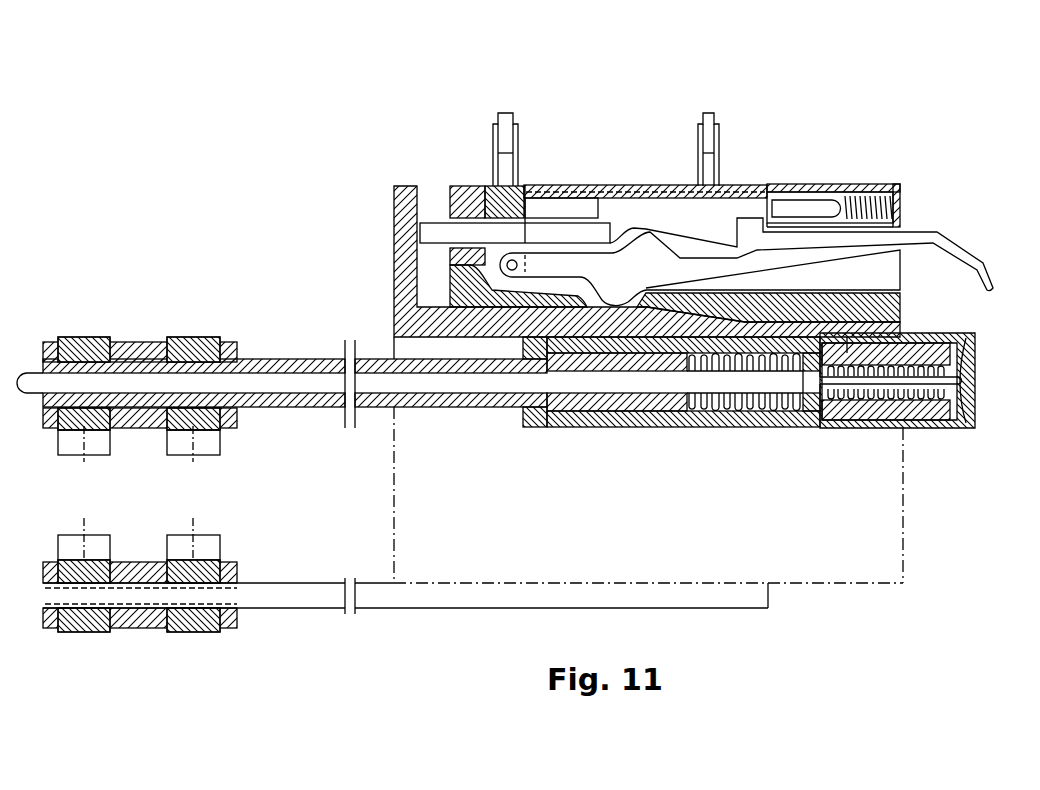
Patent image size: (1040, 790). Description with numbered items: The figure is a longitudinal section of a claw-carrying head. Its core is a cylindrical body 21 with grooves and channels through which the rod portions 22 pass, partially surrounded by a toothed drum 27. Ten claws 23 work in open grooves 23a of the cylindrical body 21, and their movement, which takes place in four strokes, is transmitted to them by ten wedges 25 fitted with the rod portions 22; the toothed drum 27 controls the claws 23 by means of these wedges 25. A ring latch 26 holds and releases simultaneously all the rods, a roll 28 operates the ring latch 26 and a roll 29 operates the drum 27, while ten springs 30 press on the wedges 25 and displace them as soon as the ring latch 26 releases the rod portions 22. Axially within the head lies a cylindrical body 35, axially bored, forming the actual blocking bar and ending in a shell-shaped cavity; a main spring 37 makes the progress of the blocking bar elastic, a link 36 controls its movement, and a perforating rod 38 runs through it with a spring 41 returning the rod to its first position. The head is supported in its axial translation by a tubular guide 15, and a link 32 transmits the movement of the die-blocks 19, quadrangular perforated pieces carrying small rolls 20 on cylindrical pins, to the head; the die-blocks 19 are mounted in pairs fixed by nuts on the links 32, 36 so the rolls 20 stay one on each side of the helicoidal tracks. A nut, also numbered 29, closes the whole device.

The guide of the heads 15 is at (402, 197).
The die-block 19 is at (183, 342).
The small roll 20 is at (210, 542).
The claw-carrying head 21 is at (562, 205).
The rod portion 22 is at (423, 238).
The claw 23 is at (960, 243).
The groove 23a is at (880, 270).
The wedge 25 is at (666, 210).
The ring latch 26 is at (494, 196).
The toothed drum 27 is at (617, 194).
The roll 28 is at (506, 112).
The roll 29 is at (710, 113).
The spring 30 is at (873, 195).
The link 32 is at (448, 610).
The cylindrical body 35 is at (616, 428).
The link 36 is at (326, 360).
The main spring 37 is at (737, 428).
The perforating rod 38 is at (270, 371).
The spring 41 is at (865, 428).